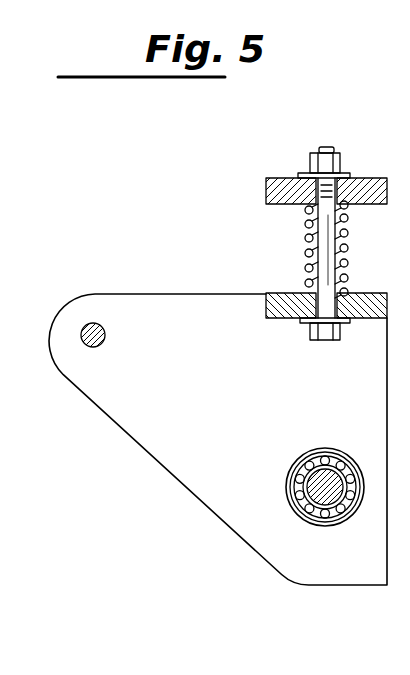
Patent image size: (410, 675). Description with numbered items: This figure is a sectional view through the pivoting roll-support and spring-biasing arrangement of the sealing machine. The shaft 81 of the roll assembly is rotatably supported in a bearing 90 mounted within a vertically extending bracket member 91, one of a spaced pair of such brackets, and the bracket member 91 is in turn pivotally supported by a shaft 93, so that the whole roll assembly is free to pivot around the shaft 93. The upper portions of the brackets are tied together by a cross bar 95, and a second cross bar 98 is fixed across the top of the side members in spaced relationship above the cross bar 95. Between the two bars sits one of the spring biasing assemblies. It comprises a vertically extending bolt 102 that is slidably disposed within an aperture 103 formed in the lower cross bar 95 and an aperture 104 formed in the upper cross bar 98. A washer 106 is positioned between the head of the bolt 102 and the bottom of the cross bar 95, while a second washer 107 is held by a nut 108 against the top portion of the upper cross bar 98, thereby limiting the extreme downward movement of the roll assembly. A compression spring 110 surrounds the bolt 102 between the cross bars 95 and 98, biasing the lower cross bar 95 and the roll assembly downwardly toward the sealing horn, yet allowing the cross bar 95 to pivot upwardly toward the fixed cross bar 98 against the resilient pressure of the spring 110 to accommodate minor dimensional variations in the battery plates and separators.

The shaft 81 is at (323, 476).
The bearing 90 is at (320, 524).
The bracket member 91 is at (195, 460).
The shaft 93 is at (104, 334).
The cross bar 95 is at (282, 318).
The second cross bar 98 is at (284, 182).
The bolt 102 is at (330, 341).
The aperture 103 is at (363, 320).
The aperture 104 is at (295, 200).
The washer 106 is at (303, 324).
The second washer 107 is at (349, 172).
The nut 108 is at (302, 171).
The compression spring 110 is at (304, 242).